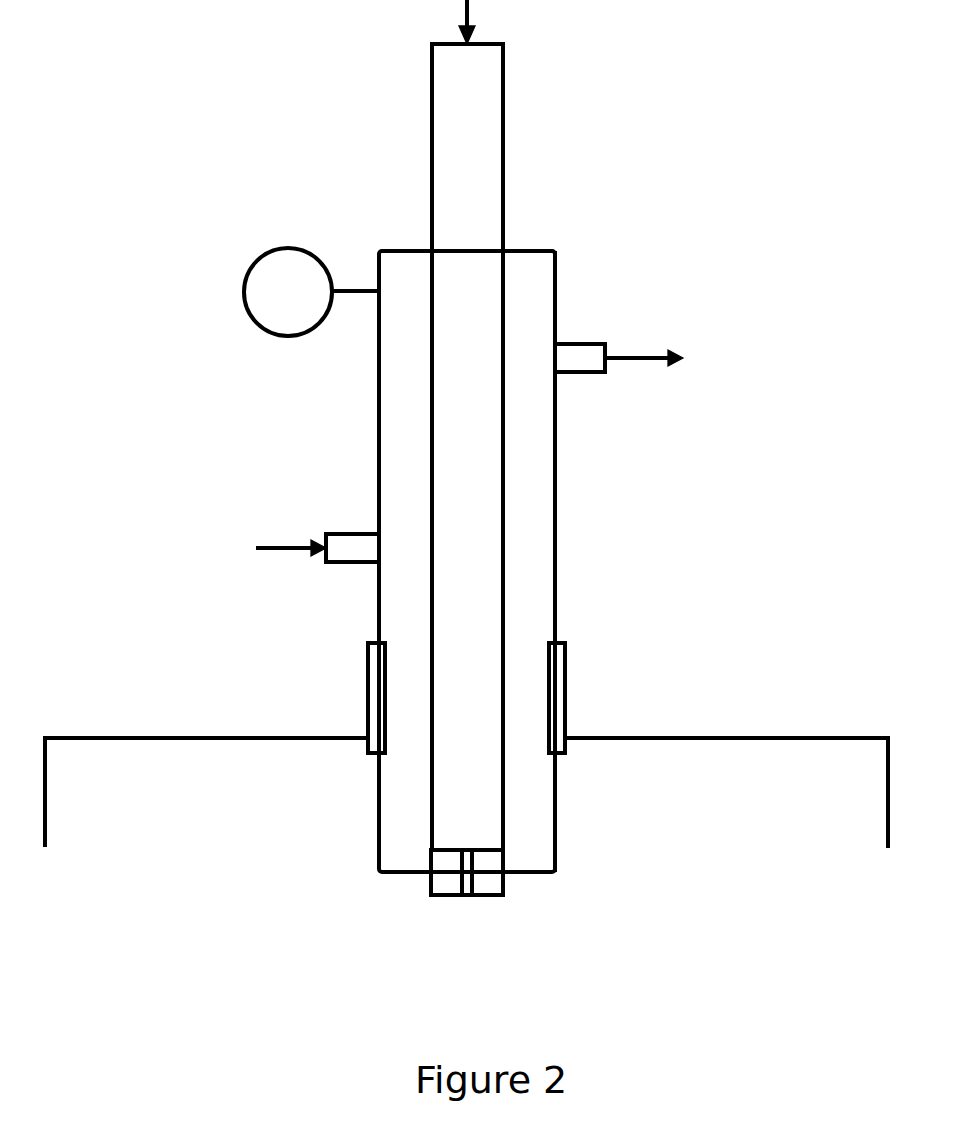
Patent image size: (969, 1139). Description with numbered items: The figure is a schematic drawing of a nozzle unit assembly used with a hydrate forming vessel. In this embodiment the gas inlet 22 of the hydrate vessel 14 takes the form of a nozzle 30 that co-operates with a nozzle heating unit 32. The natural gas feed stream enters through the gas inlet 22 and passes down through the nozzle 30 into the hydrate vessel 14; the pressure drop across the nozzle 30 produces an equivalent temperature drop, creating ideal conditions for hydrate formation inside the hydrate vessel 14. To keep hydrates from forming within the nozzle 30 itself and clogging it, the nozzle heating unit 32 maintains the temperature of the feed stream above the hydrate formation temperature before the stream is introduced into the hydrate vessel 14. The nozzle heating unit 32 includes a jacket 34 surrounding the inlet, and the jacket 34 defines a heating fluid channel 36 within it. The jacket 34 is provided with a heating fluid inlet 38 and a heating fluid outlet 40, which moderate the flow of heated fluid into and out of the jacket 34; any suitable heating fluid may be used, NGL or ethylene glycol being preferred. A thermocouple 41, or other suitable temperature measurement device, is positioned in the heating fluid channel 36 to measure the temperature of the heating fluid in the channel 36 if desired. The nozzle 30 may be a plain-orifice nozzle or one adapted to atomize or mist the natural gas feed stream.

The hydrate vessel 14 is at (715, 738).
The gas inlet 22 is at (562, 134).
The nozzle 30 is at (493, 896).
The nozzle heating unit 32 is at (626, 512).
The jacket 34 is at (557, 613).
The heating fluid channel 36 is at (537, 508).
The heating fluid inlet 38 is at (340, 534).
The heating fluid outlet 40 is at (592, 344).
The thermocouple 41 is at (290, 248).